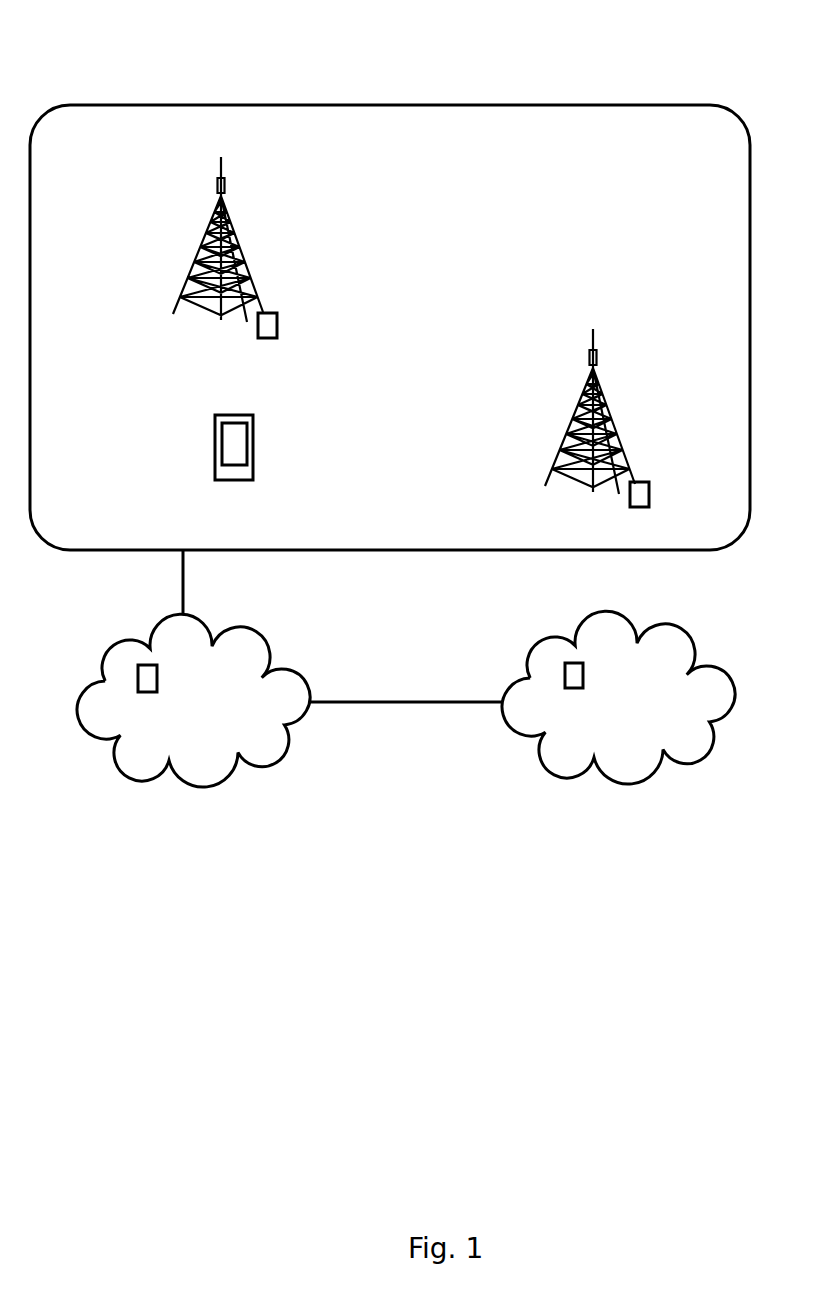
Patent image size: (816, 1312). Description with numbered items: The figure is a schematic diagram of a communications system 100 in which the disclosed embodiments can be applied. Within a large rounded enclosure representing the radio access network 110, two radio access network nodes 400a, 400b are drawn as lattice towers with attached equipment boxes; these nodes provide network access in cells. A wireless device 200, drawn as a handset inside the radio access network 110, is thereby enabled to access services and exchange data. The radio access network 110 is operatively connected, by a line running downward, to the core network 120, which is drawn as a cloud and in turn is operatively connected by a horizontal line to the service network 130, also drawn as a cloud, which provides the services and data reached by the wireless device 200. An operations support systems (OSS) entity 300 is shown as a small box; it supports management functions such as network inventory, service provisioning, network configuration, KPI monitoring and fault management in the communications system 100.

The communications system 100 is at (126, 61).
The radio access network 110 is at (718, 149).
The core network 120 is at (222, 722).
The service network 130 is at (645, 719).
The wireless device 200 is at (253, 449).
The operations support systems (OSS) entity 300 is at (148, 692).
The radio access network node 400a is at (277, 322).
The radio access network node 400b is at (649, 491).